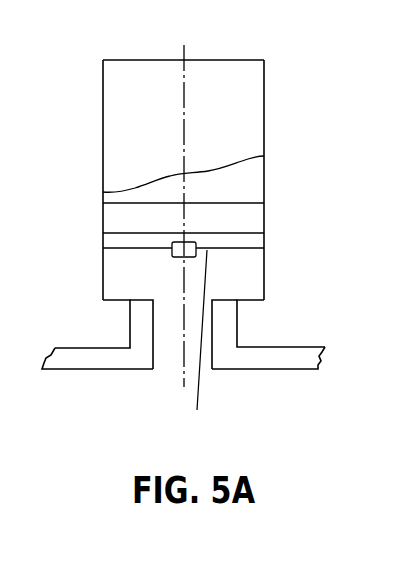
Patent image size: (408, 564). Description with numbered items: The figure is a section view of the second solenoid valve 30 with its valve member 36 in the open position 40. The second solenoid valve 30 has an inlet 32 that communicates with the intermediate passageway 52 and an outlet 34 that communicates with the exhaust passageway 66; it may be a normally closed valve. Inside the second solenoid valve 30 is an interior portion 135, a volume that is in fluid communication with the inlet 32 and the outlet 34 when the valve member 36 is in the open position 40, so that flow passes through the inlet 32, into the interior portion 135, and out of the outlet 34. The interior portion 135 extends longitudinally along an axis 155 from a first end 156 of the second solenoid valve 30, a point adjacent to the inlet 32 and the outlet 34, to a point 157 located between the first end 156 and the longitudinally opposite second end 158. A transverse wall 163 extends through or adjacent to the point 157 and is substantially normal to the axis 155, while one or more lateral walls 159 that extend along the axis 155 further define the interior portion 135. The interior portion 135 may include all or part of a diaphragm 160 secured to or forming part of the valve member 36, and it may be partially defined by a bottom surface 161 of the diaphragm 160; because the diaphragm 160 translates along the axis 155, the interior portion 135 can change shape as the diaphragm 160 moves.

The second solenoid valve 30 is at (270, 48).
The open position 40 is at (312, 123).
The axis 155 is at (184, 46).
The second end 158 is at (264, 70).
The transverse wall 163 is at (232, 203).
The point 157 is at (264, 203).
The valve member 36 is at (173, 242).
The diaphragm 160 is at (245, 248).
The interior portion 135 is at (247, 268).
The inlet 32 is at (141, 300).
The outlet 34 is at (225, 300).
The lateral wall 159 is at (102, 289).
The first end 156 is at (264, 300).
The intermediate passageway 52 is at (99, 357).
The exhaust passageway 66 is at (280, 360).
The bottom surface 161 is at (196, 344).